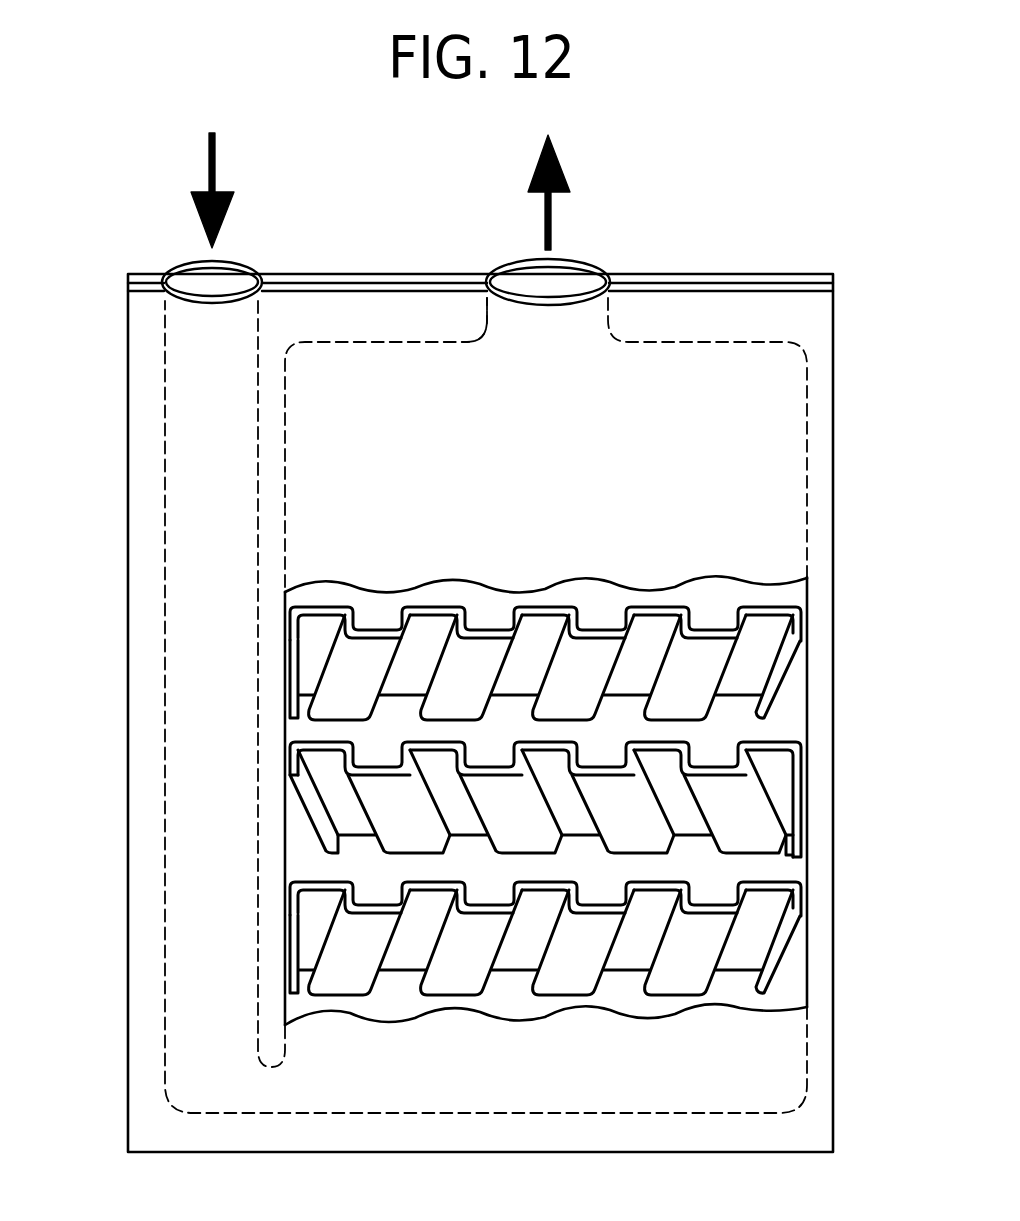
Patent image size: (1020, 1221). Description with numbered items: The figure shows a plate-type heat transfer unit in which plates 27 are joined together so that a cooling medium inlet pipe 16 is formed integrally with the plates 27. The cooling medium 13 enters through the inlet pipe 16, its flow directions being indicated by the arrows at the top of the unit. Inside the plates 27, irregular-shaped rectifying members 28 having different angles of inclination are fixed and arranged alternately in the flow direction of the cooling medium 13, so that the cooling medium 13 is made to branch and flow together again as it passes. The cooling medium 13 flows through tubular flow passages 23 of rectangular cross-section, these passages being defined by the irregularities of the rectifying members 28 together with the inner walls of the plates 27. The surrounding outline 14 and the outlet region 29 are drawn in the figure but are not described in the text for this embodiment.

The cooling medium 13 is at (398, 191).
The housing case 14 is at (143, 988).
The cooling medium inlet pipe 16 is at (190, 437).
The tubular flow passages 23 is at (717, 753).
The plates 27 is at (770, 274).
The irregular-shaped rectifying members 28 is at (705, 660).
The outlet passage 29 is at (500, 315).